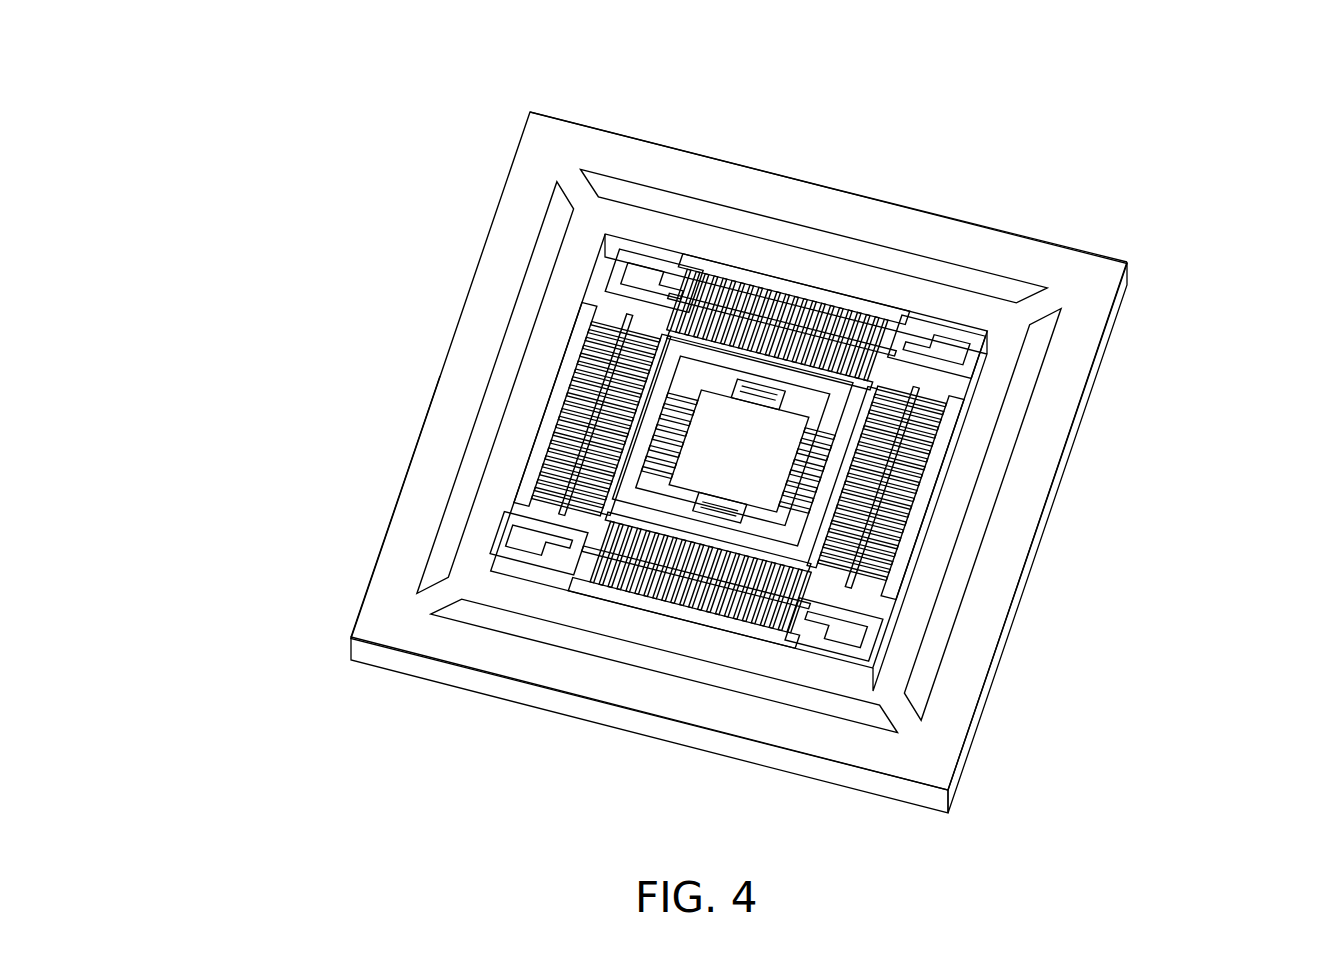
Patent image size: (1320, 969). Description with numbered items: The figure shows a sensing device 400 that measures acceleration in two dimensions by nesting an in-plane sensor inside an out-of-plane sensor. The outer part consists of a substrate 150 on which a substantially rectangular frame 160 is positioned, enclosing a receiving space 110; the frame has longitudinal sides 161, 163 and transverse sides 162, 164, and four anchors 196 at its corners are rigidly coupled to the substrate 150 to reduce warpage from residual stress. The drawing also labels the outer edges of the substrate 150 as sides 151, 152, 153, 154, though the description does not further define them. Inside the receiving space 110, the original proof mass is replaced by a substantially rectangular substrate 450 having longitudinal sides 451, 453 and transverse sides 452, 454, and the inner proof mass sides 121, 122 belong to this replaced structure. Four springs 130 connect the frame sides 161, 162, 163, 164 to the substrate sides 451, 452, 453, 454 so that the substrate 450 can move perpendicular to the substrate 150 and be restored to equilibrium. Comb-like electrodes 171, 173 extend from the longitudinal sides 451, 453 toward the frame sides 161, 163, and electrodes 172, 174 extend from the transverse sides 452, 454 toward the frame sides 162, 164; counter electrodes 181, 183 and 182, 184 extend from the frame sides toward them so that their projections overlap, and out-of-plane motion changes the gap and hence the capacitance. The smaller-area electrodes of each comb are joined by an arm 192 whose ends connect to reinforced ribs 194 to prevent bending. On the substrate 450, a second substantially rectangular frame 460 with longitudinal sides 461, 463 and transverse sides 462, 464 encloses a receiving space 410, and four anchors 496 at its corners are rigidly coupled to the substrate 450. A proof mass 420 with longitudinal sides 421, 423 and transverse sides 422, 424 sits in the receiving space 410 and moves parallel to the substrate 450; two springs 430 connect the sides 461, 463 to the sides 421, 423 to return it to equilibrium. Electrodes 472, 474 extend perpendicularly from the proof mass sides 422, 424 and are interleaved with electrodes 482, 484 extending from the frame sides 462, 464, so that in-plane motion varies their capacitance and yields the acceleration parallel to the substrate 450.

The receiving space 110 is at (826, 622).
The longitudinal side of proof mass 121 is at (755, 560).
The transverse side of proof mass 122 is at (585, 190).
The spring 130 is at (512, 590).
The substrate 150 is at (805, 195).
The first frame side 151 is at (560, 705).
The second frame side 152 is at (365, 585).
The third frame side 153 is at (625, 178).
The fourth frame side 154 is at (967, 747).
The frame 160 is at (565, 250).
The longitudinal side of frame 161 is at (512, 590).
The transverse side of frame 162 is at (547, 327).
The longitudinal side of frame 163 is at (797, 275).
The transverse side of frame 164 is at (978, 415).
The electrode 171 is at (613, 605).
The electrode 172 is at (600, 320).
The electrode 173 is at (850, 300).
The electrode 174 is at (930, 500).
The counter electrode 181 is at (557, 698).
The counter electrode 182 is at (575, 345).
The counter electrode 183 is at (905, 312).
The counter electrode 184 is at (943, 473).
The arm 192 is at (590, 372).
The reinforced rib 194 is at (583, 227).
The anchor 196 is at (480, 588).
The sensing device 400 is at (189, 101).
The receiving space 410 is at (860, 580).
The proof mass 420 is at (698, 603).
The longitudinal side of proof mass 421 is at (500, 560).
The transverse side of proof mass 422 is at (615, 250).
The longitudinal side of proof mass 423 is at (985, 390).
The transverse side of proof mass 424 is at (915, 520).
The spring 430 is at (985, 332).
The substrate 450 is at (895, 560).
The longitudinal side of substrate 451 is at (655, 617).
The transverse side of substrate 452 is at (525, 470).
The longitudinal side of substrate 453 is at (825, 290).
The transverse side of substrate 454 is at (955, 438).
The frame 460 is at (735, 250).
The longitudinal side of frame 461 is at (690, 630).
The transverse side of frame 462 is at (535, 485).
The longitudinal side of frame 463 is at (762, 262).
The transverse side of frame 464 is at (905, 540).
The electrodes 472 is at (545, 440).
The electrodes 474 is at (722, 575).
The electrodes 482 is at (565, 405).
The electrodes 484 is at (1000, 405).
The anchor 496 is at (505, 498).